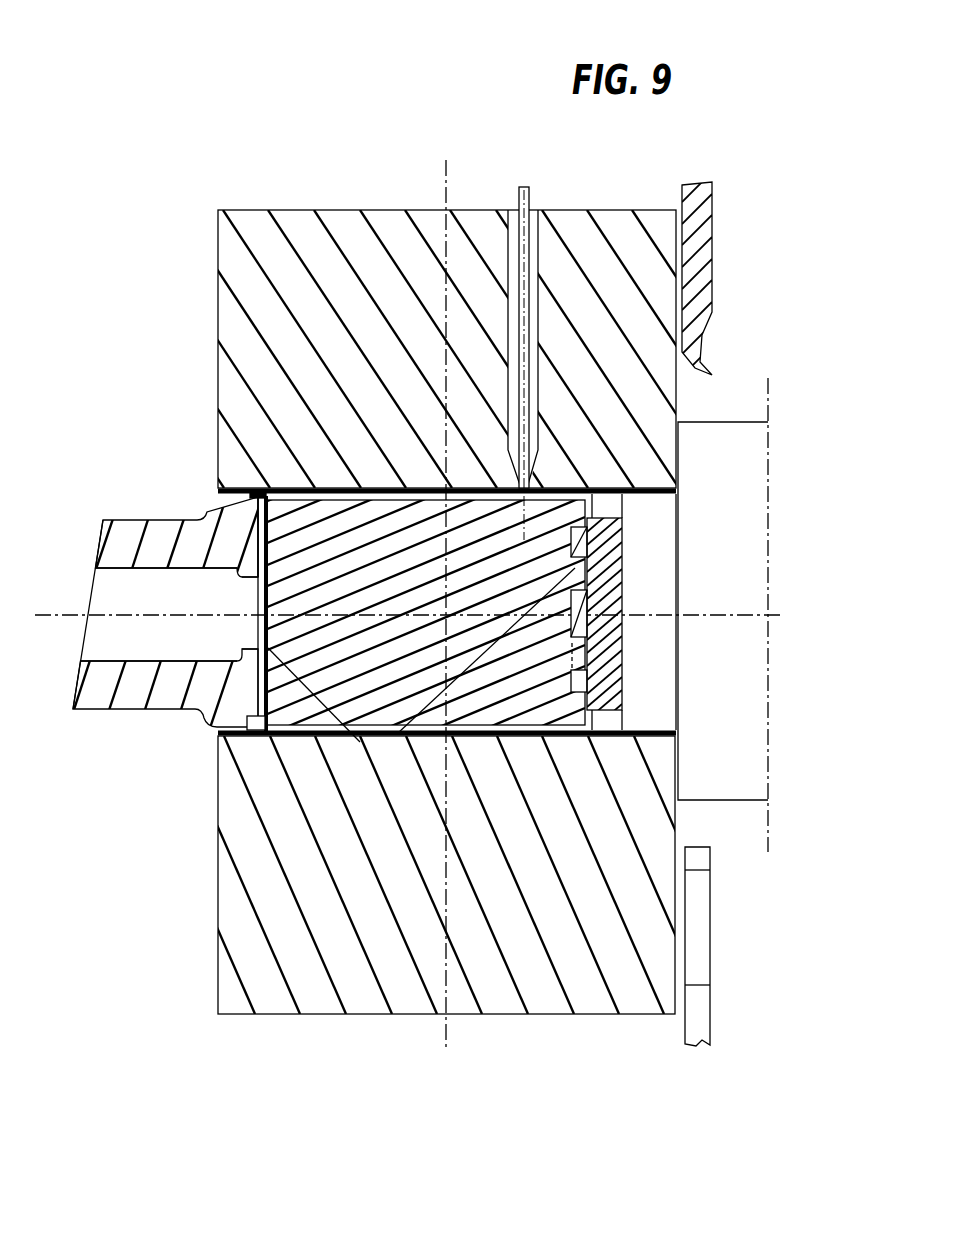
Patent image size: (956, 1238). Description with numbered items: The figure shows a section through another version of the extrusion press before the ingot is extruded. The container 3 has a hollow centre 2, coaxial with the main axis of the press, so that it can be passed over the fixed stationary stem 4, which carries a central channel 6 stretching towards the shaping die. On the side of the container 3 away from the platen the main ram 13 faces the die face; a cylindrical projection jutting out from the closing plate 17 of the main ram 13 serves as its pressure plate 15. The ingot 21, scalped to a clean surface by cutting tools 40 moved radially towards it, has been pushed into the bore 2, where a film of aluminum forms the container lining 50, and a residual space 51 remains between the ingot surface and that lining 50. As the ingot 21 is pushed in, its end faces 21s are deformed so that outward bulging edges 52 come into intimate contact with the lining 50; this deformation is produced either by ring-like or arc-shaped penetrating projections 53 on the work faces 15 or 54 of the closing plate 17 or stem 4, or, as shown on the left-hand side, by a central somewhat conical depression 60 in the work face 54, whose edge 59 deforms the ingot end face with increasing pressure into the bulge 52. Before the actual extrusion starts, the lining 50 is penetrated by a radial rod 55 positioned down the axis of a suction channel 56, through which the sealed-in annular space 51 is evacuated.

The hollow centre 2 is at (603, 500).
The container 3 is at (238, 257).
The stem 4 is at (124, 540).
The central channel 6 is at (118, 650).
The main ram 13 is at (703, 496).
The pressure plate 15 is at (612, 702).
The closing plate 17 is at (604, 546).
The ingot 21 is at (370, 528).
The end faces 21s is at (421, 670).
The cutting tools 40 is at (706, 263).
The container lining 50 is at (307, 489).
The residual space 51 is at (508, 736).
The outward bulging edges 52 is at (592, 736).
The penetrating projections 53 is at (585, 680).
The work face 54 is at (262, 542).
The radial rod 55 is at (531, 196).
The suction channel 56 is at (536, 291).
The edge 59 is at (243, 489).
The depression 60 is at (245, 595).